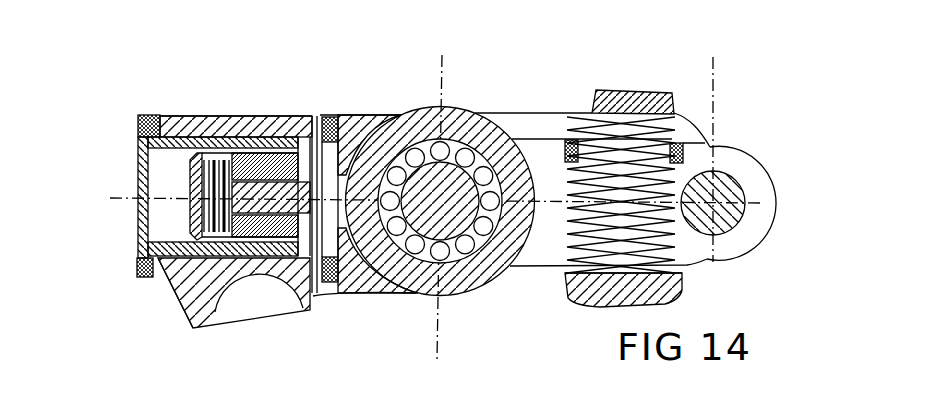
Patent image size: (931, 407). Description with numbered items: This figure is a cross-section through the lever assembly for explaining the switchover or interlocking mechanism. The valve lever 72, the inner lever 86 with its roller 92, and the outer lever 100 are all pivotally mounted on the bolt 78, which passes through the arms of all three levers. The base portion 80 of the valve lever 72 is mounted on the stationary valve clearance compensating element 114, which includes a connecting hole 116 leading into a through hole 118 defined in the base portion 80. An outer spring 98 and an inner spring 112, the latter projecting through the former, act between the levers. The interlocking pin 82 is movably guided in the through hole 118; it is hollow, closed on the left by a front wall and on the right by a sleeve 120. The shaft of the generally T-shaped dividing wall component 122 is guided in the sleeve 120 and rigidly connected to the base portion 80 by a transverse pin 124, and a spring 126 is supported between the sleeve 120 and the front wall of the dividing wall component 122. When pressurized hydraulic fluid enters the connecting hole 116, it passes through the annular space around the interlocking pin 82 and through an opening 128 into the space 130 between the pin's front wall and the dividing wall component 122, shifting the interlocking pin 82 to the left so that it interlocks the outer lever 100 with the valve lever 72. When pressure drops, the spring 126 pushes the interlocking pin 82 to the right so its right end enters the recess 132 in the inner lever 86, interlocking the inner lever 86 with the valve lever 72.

The valve lever 72 is at (214, 121).
The bolt 78 is at (730, 190).
The base portion 80 is at (198, 171).
The interlocking pin 82 is at (140, 214).
The inner lever 86 is at (331, 121).
The roller 92 is at (430, 120).
The outer spring 98 is at (566, 266).
The outer lever 100 is at (139, 128).
The inner spring 112 is at (677, 117).
The valve clearance compensating element 114 is at (178, 290).
The connecting hole 116 is at (212, 332).
The through hole 118 is at (181, 116).
The sleeve 120 is at (258, 165).
The dividing wall component 122 is at (188, 178).
The transverse pin 124 is at (293, 199).
The spring 126 is at (212, 262).
The opening 128 is at (134, 272).
The space 130 is at (160, 190).
The recess 132 is at (345, 222).